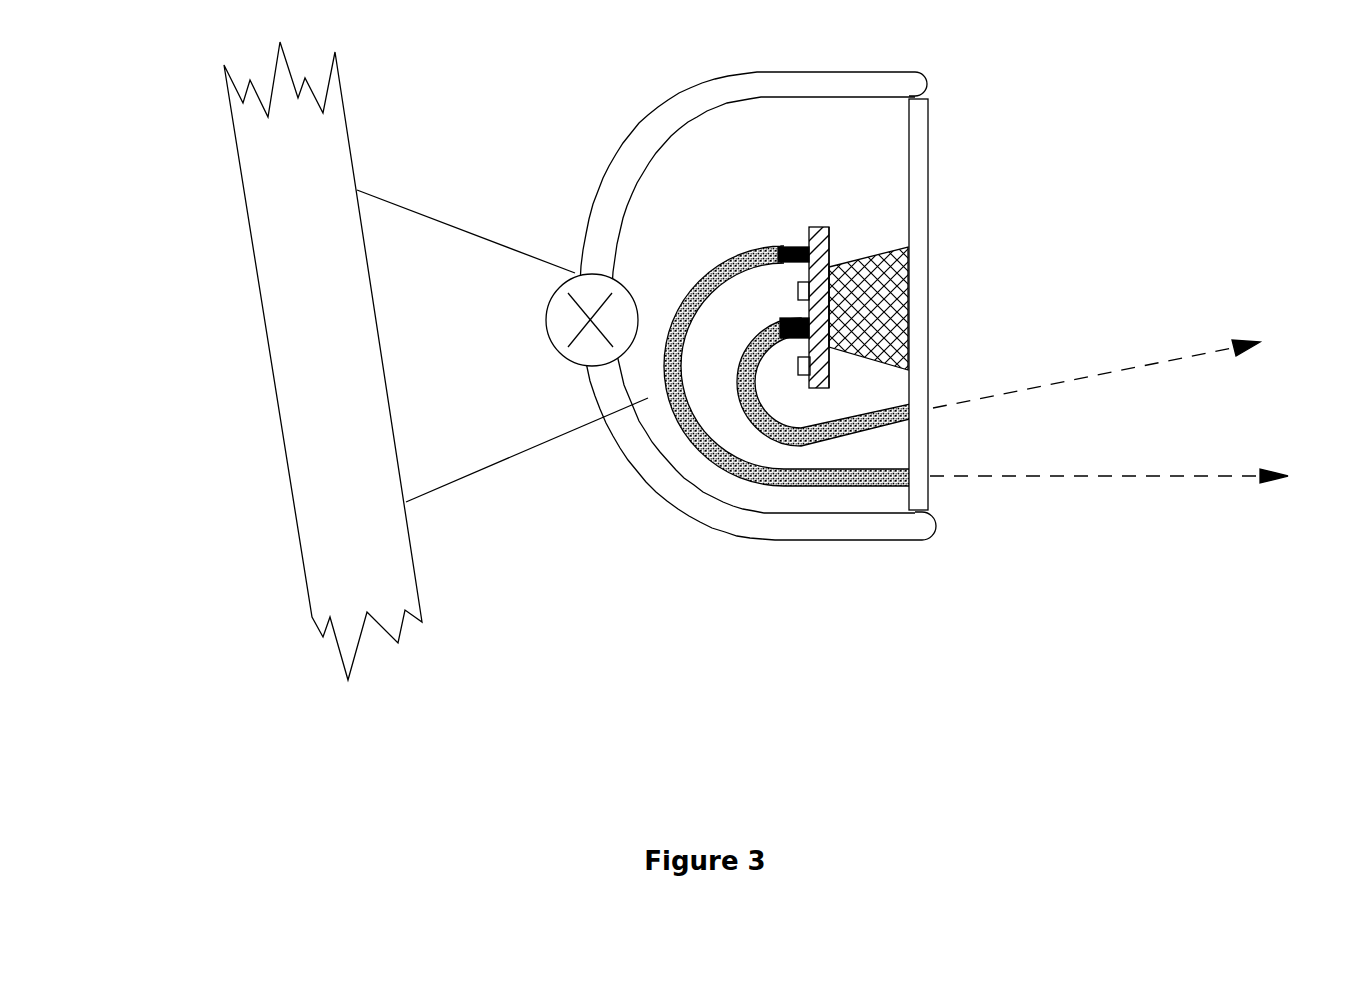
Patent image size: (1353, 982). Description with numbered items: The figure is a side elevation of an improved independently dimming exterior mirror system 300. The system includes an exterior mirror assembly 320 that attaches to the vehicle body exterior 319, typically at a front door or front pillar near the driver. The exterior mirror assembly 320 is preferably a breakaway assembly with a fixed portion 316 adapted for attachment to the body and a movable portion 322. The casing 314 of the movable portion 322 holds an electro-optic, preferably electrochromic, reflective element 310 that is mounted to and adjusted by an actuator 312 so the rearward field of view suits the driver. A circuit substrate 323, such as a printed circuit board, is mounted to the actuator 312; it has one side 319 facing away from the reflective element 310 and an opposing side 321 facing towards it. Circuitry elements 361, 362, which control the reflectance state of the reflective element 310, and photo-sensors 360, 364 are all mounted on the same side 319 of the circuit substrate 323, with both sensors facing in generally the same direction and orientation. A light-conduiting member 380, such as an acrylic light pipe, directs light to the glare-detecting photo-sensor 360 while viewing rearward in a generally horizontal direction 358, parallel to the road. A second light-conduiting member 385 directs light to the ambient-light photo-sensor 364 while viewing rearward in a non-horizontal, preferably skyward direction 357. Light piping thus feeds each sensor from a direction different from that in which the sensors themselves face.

The independently dimming exterior mirror system 300 is at (538, 611).
The electro-optic reflective element 310 is at (918, 220).
The actuator 312 is at (912, 293).
The casing 314 is at (700, 80).
The fixed portion 316 is at (427, 303).
The vehicle body exterior 319 is at (307, 228).
The exterior mirror assembly 320 is at (695, 175).
The opposing side of circuit substrate 321 is at (830, 260).
The movable portion 322 is at (541, 456).
The circuit substrate 323 is at (818, 227).
The skyward direction 357 is at (1175, 358).
The horizontal direction 358 is at (1113, 477).
The photo-sensor 360 is at (804, 246).
The circuitry element 361 is at (798, 289).
The circuitry element 362 is at (803, 369).
The photo-sensor 364 is at (783, 321).
The light-conduiting member 380 is at (712, 275).
The light-conduiting member 385 is at (832, 427).